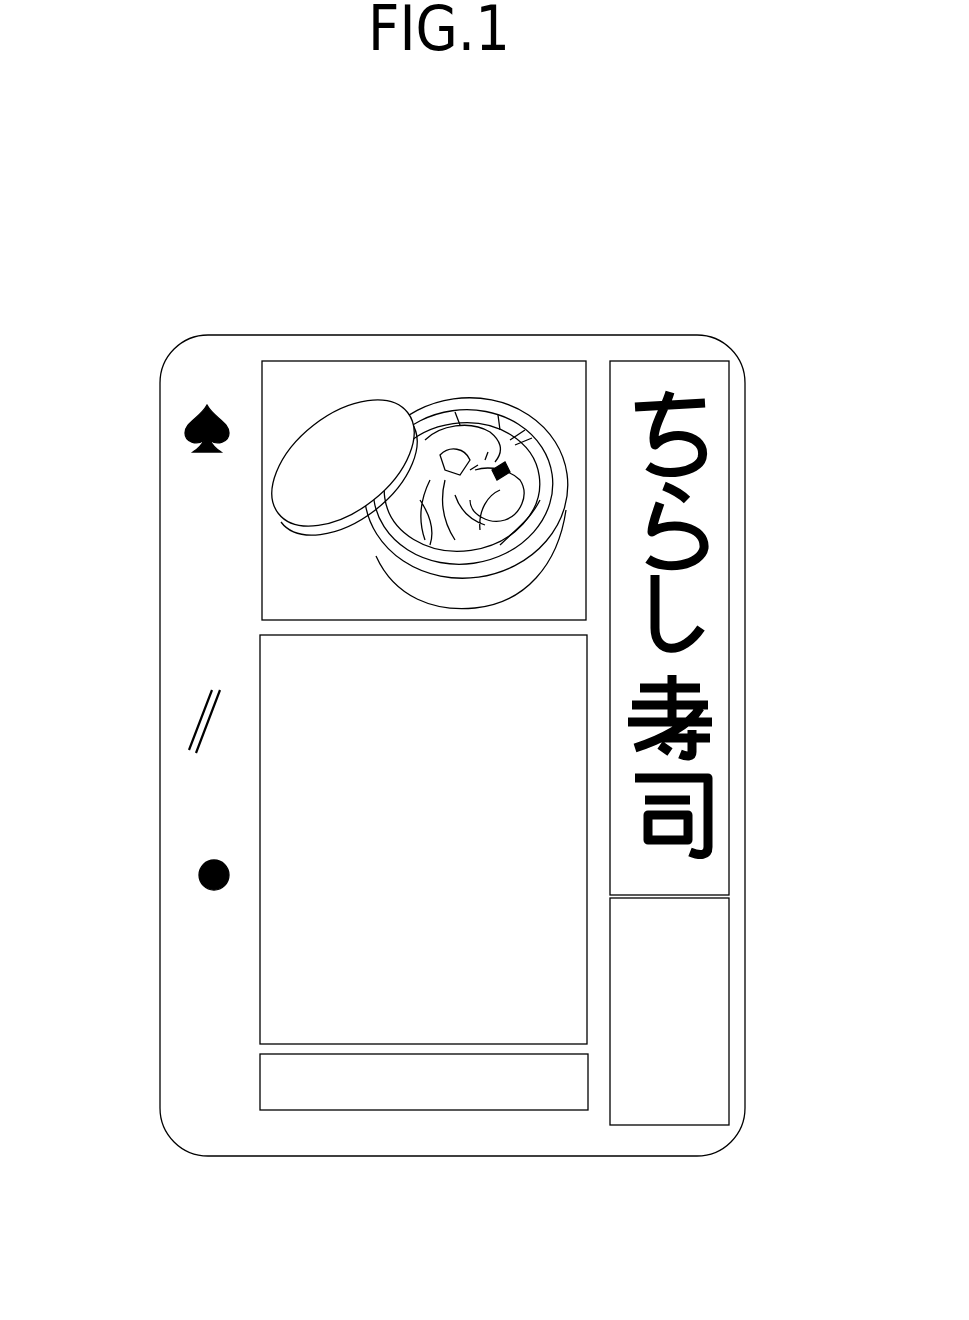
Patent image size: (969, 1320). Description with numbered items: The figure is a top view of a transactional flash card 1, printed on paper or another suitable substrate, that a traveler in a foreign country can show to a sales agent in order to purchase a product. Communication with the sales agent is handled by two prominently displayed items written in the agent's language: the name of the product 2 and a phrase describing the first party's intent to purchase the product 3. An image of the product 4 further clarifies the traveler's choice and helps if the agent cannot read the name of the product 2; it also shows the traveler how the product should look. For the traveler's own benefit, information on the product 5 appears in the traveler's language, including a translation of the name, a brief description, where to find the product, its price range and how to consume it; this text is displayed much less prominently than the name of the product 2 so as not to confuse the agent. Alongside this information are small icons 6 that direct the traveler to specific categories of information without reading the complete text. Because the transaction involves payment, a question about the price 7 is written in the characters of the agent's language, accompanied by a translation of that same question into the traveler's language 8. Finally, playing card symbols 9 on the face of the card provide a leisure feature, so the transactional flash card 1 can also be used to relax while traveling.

The transactional flash card 1 is at (501, 263).
The name of the product 2 is at (708, 396).
The phrase describing the first party's intent to purchase the product 3 is at (707, 925).
The image of the product 4 is at (290, 565).
The information on the product 5 is at (265, 648).
The icons 6 is at (183, 860).
The question about the price 7 is at (275, 1061).
The translation of the question into the traveler's language 8 is at (264, 1128).
The playing card symbols 9 is at (192, 430).